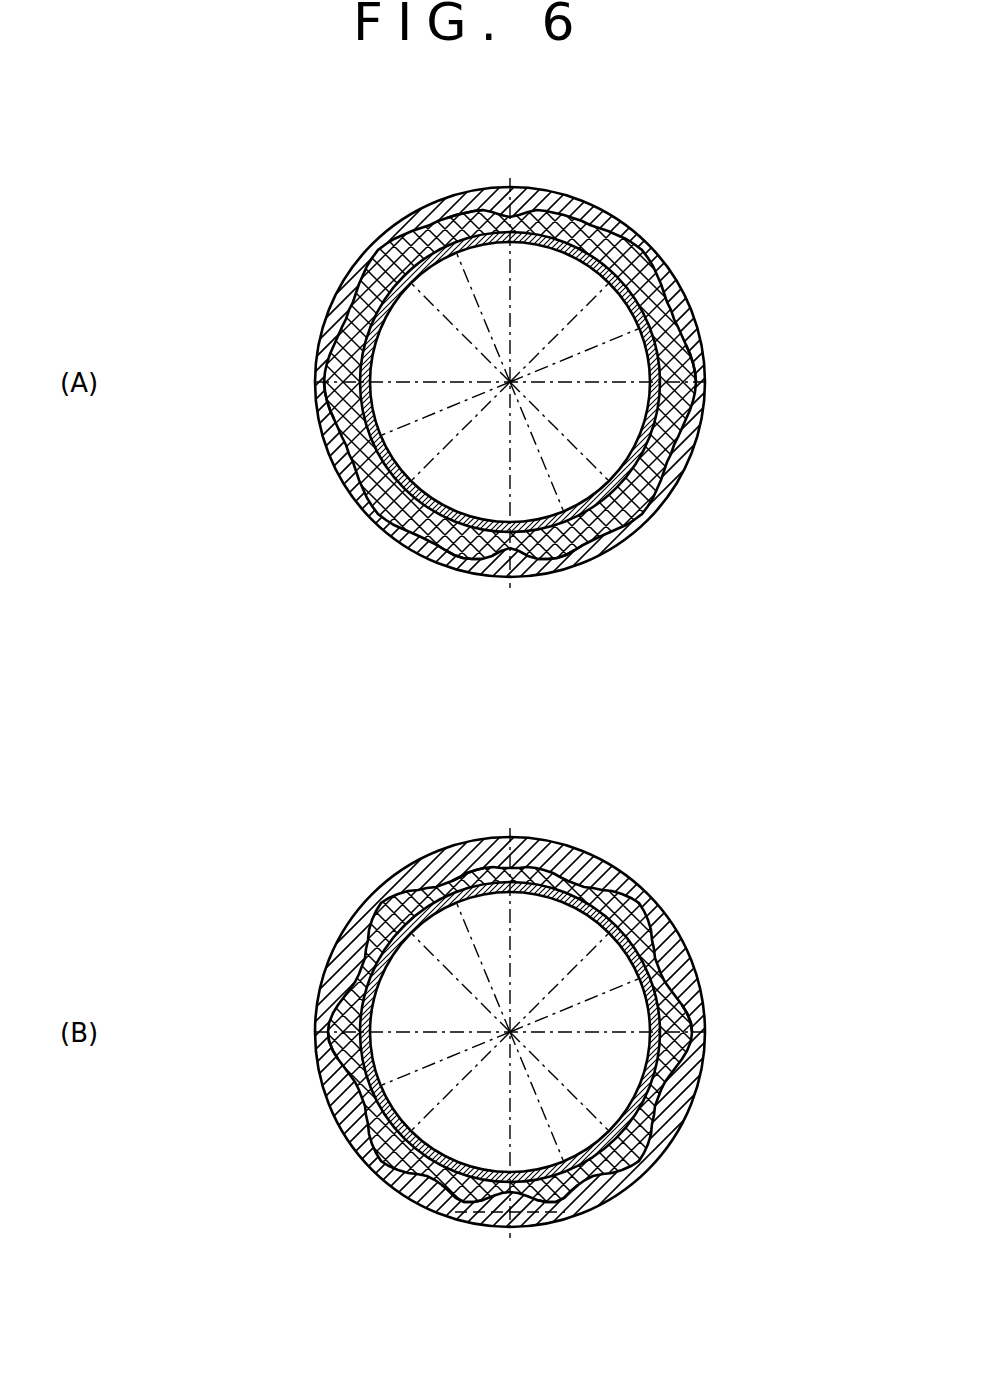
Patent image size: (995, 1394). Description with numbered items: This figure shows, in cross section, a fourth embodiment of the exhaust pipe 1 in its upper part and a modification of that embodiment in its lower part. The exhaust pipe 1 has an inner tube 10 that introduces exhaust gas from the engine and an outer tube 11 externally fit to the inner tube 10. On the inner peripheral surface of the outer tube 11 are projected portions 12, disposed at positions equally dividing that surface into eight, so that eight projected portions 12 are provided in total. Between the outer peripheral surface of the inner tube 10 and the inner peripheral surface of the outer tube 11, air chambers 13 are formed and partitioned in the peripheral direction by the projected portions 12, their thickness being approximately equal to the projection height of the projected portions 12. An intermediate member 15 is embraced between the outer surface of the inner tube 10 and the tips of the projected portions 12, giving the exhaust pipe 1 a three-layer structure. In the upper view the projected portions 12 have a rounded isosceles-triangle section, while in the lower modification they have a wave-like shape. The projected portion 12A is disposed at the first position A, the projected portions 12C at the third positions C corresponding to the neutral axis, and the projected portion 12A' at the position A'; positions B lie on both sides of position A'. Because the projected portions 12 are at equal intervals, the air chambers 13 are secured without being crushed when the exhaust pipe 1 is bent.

The exhaust pipe 1 is at (641, 174).
The inner tube 10 is at (696, 334).
The outer tube 11 is at (690, 292).
The projected portions 12 is at (402, 232).
The projected portion at first position A 12A is at (443, 503).
The projected portion at position A' 12A' is at (445, 920).
The projected portions at third positions C 12C is at (323, 428).
The air chambers 13 is at (686, 432).
The intermediate member 15 is at (588, 562).
The first position A is at (533, 473).
The position A' is at (517, 950).
The positions B is at (652, 535).
The third positions C is at (313, 382).